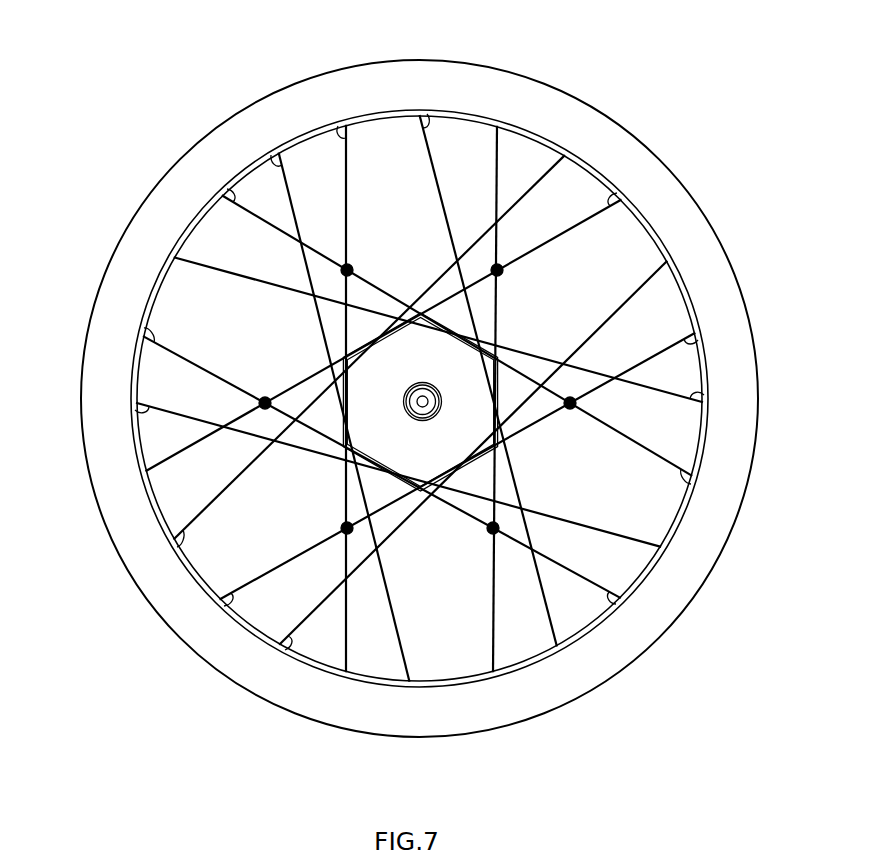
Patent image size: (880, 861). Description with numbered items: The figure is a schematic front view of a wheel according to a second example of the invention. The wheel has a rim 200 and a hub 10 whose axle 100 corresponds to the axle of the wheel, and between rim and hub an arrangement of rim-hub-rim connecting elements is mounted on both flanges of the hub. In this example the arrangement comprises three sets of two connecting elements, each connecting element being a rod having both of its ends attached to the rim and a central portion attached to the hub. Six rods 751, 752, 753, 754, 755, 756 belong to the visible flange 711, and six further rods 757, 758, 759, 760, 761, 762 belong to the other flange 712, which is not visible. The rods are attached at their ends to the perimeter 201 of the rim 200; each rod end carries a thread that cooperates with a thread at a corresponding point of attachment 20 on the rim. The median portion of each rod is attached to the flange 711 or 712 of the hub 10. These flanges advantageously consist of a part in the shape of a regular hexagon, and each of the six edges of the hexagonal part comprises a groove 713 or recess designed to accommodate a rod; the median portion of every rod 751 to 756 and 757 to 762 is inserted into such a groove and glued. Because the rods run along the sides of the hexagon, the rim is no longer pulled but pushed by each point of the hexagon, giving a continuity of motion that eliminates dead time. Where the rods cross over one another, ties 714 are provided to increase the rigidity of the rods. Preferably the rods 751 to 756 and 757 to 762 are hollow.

The rim 200 is at (558, 108).
The perimeter of the rim 201 is at (693, 298).
The point of attachment 20 is at (626, 207).
The hub 10 is at (500, 364).
The axle 100 is at (403, 403).
The rod 751 is at (478, 137).
The rod 752 is at (330, 135).
The rod 753 is at (197, 217).
The rod 754 is at (188, 368).
The rod 755 is at (157, 470).
The rod 756 is at (238, 592).
The rod 757 is at (437, 210).
The rod 758 is at (262, 170).
The rod 759 is at (216, 496).
The rod 760 is at (278, 648).
The rod 761 is at (222, 272).
The rod 762 is at (135, 402).
The flange 711 is at (432, 450).
The flange 712 is at (447, 470).
The groove 713 is at (503, 404).
The tie 714 is at (502, 270).